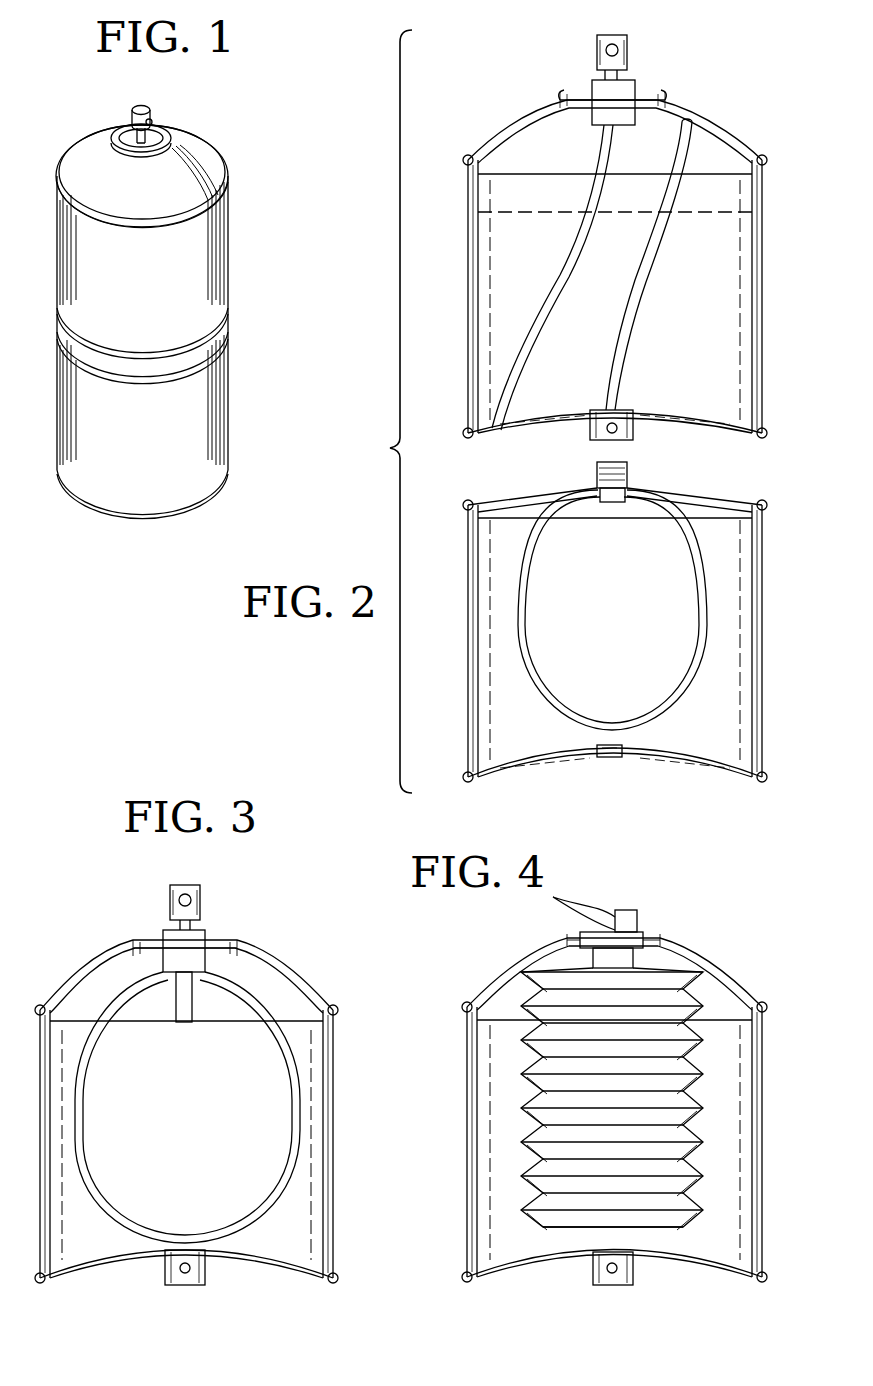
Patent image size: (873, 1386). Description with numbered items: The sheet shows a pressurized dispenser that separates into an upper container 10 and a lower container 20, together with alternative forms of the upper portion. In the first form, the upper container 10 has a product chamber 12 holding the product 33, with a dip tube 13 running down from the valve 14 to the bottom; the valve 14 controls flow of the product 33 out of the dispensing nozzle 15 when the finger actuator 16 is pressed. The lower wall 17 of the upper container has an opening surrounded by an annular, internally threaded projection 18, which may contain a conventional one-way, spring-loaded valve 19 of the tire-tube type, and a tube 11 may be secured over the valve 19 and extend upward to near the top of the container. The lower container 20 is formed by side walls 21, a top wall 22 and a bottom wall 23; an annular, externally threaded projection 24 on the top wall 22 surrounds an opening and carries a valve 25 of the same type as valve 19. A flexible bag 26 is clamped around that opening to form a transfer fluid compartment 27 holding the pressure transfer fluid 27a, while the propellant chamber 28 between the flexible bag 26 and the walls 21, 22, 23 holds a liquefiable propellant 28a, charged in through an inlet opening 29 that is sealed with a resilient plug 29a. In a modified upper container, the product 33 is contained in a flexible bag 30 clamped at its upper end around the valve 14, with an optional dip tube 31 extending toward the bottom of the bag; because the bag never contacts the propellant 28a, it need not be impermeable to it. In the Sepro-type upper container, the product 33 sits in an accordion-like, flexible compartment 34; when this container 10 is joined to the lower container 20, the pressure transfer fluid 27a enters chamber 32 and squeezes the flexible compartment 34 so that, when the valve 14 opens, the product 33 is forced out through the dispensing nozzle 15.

In FIG. 1, the upper container 10 is at (230, 258).
In FIG. 2, the upper container 10 is at (760, 330).
In FIG. 2, the tube 11 is at (630, 318).
In FIG. 3, the tube 11 is at (333, 1068).
In FIG. 4, the tube 11 is at (760, 1085).
In FIG. 2, the product chamber 12 is at (714, 276).
In FIG. 2, the dip tube 13 is at (540, 306).
In FIG. 2, the valve 14 is at (603, 115).
In FIG. 3, the valve 14 is at (205, 962).
In FIG. 4, the valve 14 is at (620, 962).
In FIG. 1, the dispensing nozzle 15 is at (152, 124).
In FIG. 2, the dispensing nozzle 15 is at (618, 50).
In FIG. 3, the dispensing nozzle 15 is at (200, 902).
In FIG. 4, the dispensing nozzle 15 is at (637, 920).
In FIG. 1, the finger actuator 16 is at (133, 108).
In FIG. 2, the finger actuator 16 is at (614, 35).
In FIG. 3, the finger actuator 16 is at (170, 898).
In FIG. 4, the finger actuator 16 is at (624, 910).
In FIG. 2, the lower wall 17 is at (672, 416).
In FIG. 2, the annular, internally threaded projection 18 is at (632, 435).
In FIG. 3, the annular, internally threaded projection 18 is at (205, 1275).
In FIG. 4, the annular, internally threaded projection 18 is at (634, 1276).
In FIG. 2, the one-way, spring-loaded valve 19 is at (607, 422).
In FIG. 3, the one-way, spring-loaded valve 19 is at (180, 1272).
In FIG. 4, the one-way, spring-loaded valve 19 is at (605, 1270).
In FIG. 1, the lower container 20 is at (230, 414).
In FIG. 2, the lower container 20 is at (648, 644).
In FIG. 2, the side walls 21 is at (764, 592).
In FIG. 2, the top wall 22 is at (690, 500).
In FIG. 2, the bottom wall 23 is at (697, 765).
In FIG. 2, the annular, externally threaded projection 24 is at (596, 470).
In FIG. 2, the valve 25 is at (607, 505).
In FIG. 2, the flexible bag 26 is at (697, 556).
In FIG. 2, the transfer fluid compartment 27 is at (648, 598).
In FIG. 2, the pressure transfer fluid 27a is at (661, 538).
In FIG. 2, the propellant chamber 28 is at (726, 715).
In FIG. 2, the liquefiable propellant 28a is at (717, 663).
In FIG. 2, the inlet opening 29 is at (616, 757).
In FIG. 2, the plug 29a is at (603, 752).
In FIG. 3, the flexible bag 30 is at (272, 1200).
In FIG. 3, the dip tube 31 is at (187, 1025).
In FIG. 3, the chamber 32 is at (100, 1234).
In FIG. 4, the chamber 32 is at (731, 1070).
In FIG. 2, the product 33 is at (624, 252).
In FIG. 3, the product 33 is at (148, 1131).
In FIG. 4, the product 33 is at (630, 1062).
In FIG. 4, the accordion-like, flexible compartment 34 is at (680, 1137).